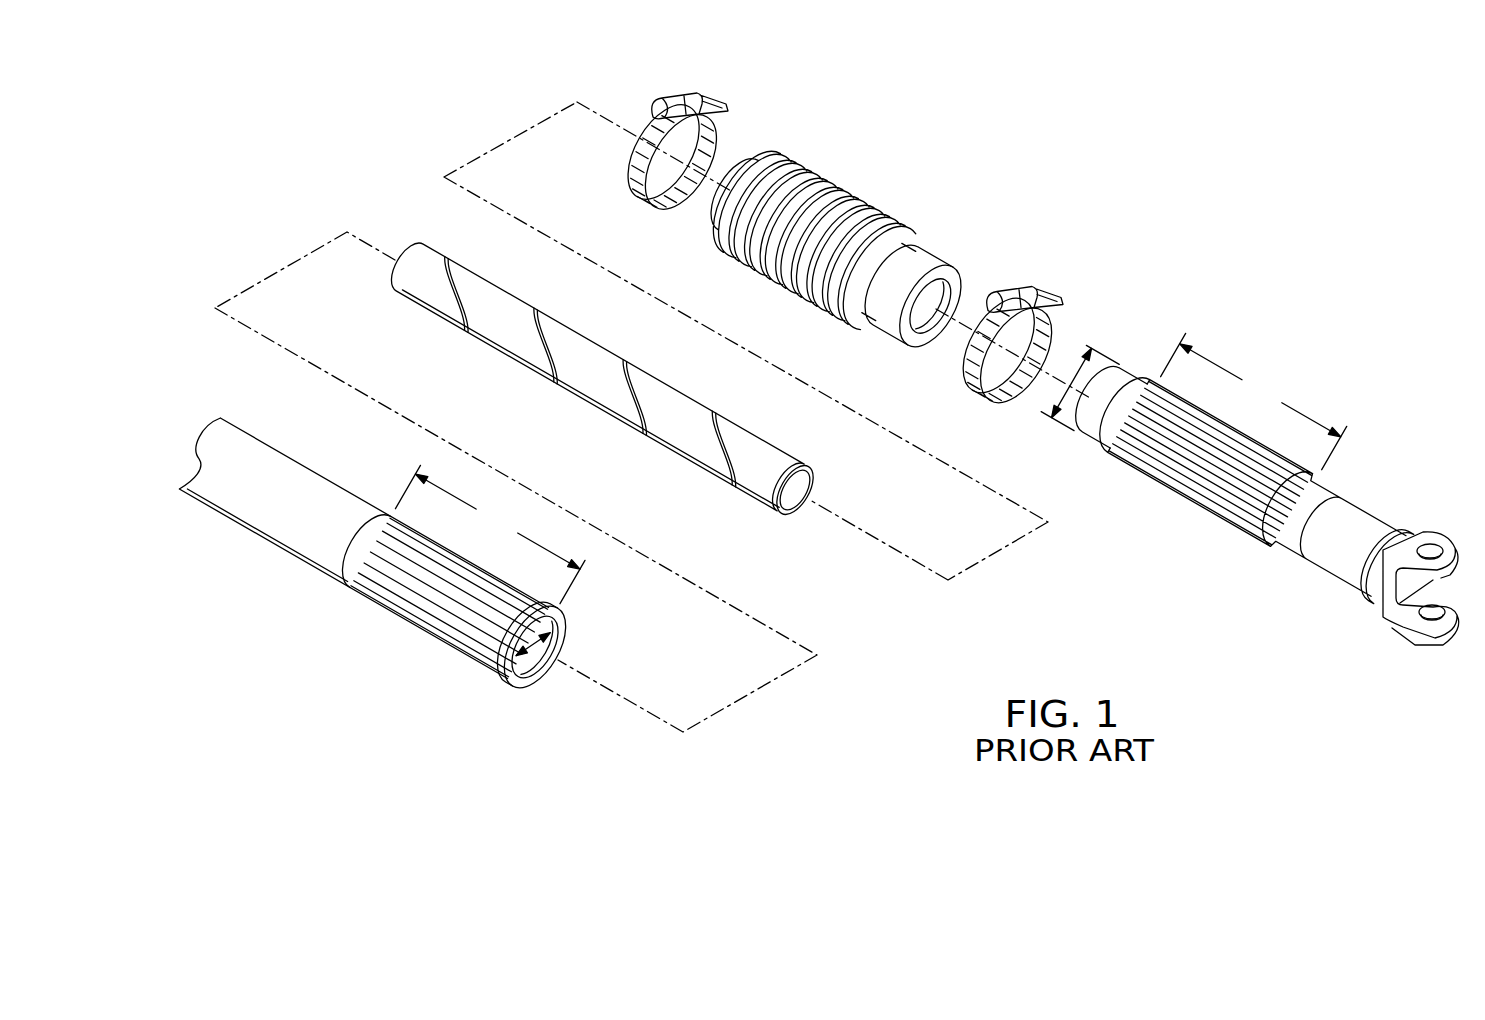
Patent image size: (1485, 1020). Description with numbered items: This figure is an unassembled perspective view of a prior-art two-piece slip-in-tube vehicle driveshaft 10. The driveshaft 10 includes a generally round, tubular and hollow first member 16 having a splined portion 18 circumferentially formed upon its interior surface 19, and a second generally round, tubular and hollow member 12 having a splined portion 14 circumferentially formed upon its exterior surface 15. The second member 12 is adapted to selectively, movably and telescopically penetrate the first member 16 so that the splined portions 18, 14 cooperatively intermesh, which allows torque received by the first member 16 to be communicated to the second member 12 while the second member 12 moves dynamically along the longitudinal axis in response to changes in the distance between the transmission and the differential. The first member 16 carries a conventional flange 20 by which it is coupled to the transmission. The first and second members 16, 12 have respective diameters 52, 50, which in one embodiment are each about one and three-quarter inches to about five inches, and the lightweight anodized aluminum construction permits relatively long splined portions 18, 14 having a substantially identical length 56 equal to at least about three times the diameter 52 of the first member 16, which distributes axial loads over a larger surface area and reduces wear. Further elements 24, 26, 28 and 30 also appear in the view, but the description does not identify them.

The double-tube slip-in-tube vehicle driveshaft 10 is at (1188, 212).
The second member 12 is at (278, 510).
The splined portion of the second member 14 is at (404, 582).
The exterior surface 15 is at (470, 637).
The first member 16 is at (1343, 585).
The splined portion of the first member 18 is at (1207, 484).
The interior surface 19 is at (1077, 430).
The flange 20 is at (1430, 545).
The spiral wrap liner 24 is at (486, 305).
The bellows boot 26 is at (846, 203).
The hose clamp 28 is at (690, 97).
The hose clamp 30 is at (1021, 292).
The diameter of the second member 50 is at (537, 668).
The diameter of the first member 52 is at (1062, 350).
The length of the splined portions 56 is at (870, 468).